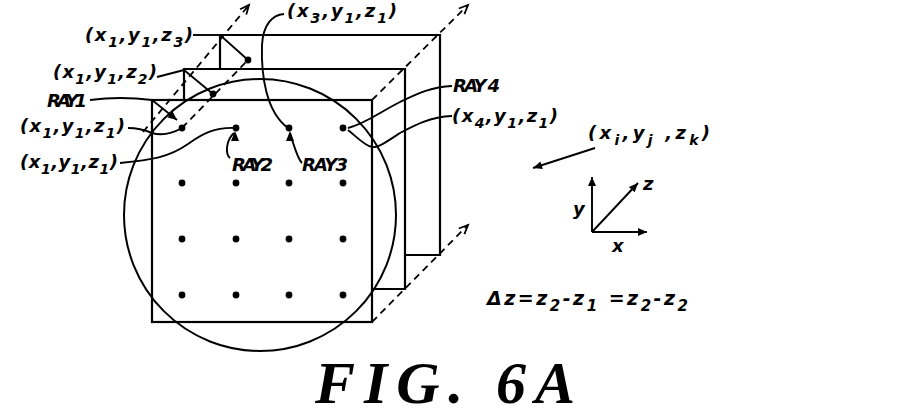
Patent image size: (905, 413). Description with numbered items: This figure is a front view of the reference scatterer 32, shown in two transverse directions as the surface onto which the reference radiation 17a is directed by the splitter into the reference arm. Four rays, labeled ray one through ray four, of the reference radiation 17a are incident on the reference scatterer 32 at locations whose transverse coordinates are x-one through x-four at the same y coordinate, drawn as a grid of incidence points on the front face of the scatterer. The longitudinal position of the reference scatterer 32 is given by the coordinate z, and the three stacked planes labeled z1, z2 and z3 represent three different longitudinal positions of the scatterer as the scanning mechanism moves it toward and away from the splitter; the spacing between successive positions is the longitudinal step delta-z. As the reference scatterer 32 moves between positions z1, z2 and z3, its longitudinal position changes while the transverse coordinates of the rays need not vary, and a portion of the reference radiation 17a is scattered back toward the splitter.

The reference scatterer 32 is at (108, 198).
The reference radiation 17a is at (130, 252).
The first longitudinal position z1 is at (275, 218).
The second longitudinal position z2 is at (310, 187).
The third longitudinal position z3 is at (346, 153).